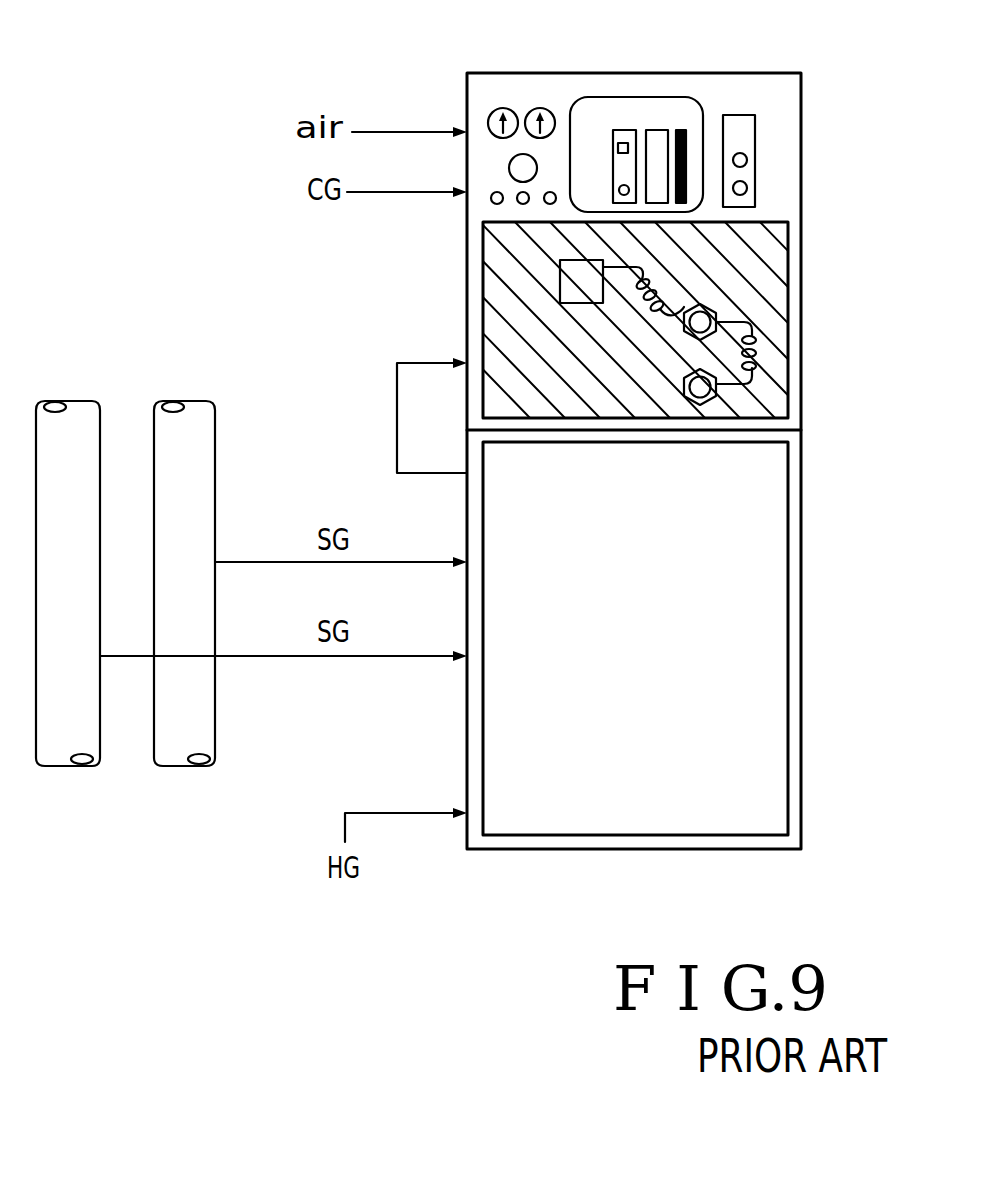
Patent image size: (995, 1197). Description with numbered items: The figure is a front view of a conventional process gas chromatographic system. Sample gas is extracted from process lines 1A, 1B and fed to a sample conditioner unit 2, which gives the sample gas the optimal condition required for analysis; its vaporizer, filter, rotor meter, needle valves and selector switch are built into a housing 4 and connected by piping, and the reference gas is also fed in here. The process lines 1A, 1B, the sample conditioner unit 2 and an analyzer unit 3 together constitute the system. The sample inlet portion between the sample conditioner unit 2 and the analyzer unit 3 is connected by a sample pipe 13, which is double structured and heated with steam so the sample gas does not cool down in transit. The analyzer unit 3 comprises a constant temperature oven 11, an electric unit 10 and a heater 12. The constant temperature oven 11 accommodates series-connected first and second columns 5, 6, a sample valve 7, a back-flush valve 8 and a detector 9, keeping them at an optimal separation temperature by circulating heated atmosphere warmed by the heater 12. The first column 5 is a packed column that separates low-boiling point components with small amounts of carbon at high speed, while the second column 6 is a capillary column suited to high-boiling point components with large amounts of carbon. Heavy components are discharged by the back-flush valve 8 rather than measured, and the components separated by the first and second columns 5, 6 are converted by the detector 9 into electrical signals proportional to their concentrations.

The process line 1A is at (74, 434).
The process line 1B is at (191, 434).
The sample conditioner unit 2 is at (828, 697).
The analyzer unit 3 is at (818, 210).
The housing 4 is at (803, 800).
The first column 5 is at (757, 360).
The second column 6 is at (650, 283).
The sample valve 7 is at (710, 402).
The back-flush valve 8 is at (713, 303).
The detector 9 is at (578, 273).
The electric unit 10 is at (687, 97).
The constant temperature oven 11 is at (780, 261).
The heater 12 is at (745, 138).
The sample pipe 13 is at (397, 405).